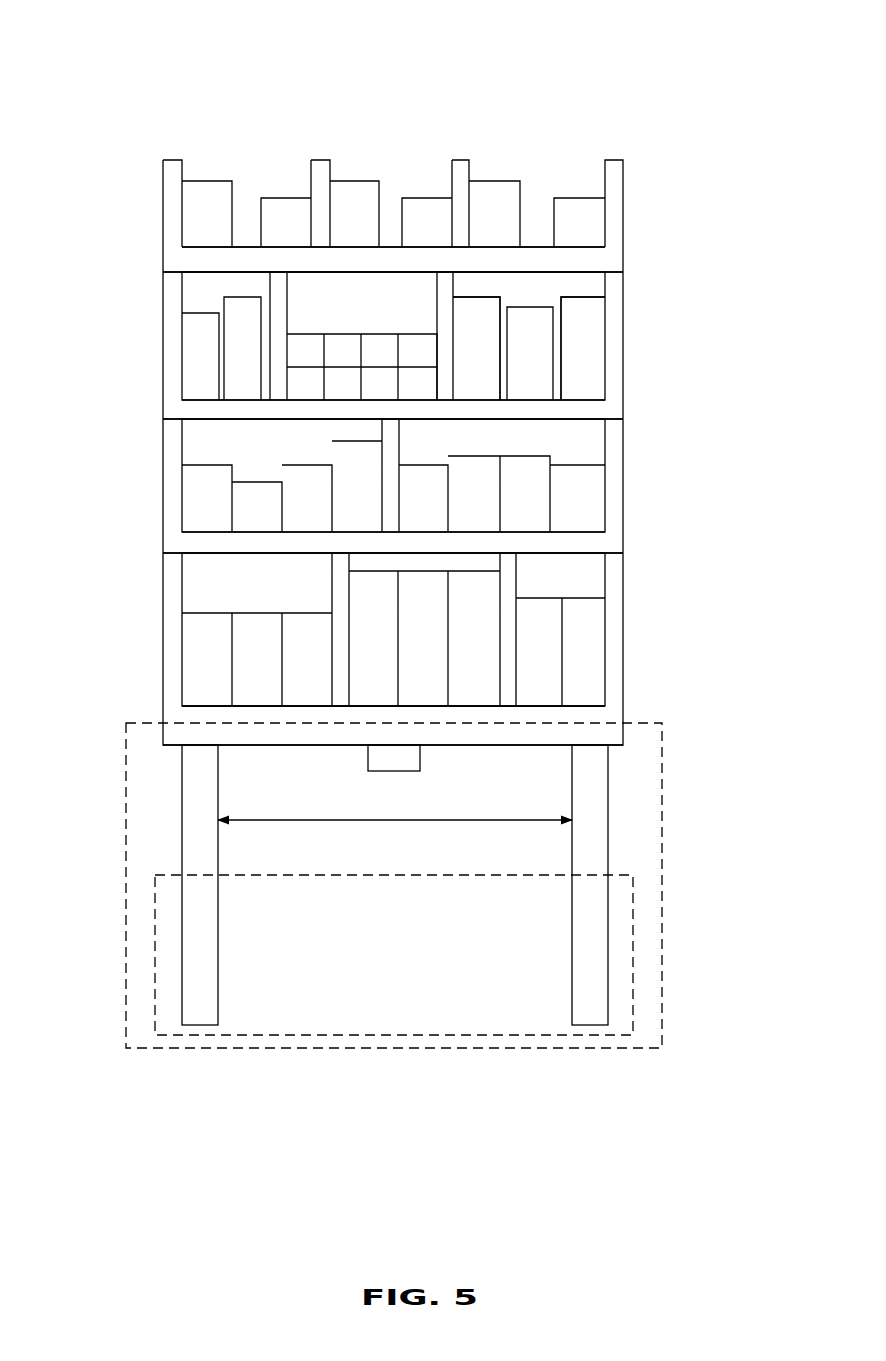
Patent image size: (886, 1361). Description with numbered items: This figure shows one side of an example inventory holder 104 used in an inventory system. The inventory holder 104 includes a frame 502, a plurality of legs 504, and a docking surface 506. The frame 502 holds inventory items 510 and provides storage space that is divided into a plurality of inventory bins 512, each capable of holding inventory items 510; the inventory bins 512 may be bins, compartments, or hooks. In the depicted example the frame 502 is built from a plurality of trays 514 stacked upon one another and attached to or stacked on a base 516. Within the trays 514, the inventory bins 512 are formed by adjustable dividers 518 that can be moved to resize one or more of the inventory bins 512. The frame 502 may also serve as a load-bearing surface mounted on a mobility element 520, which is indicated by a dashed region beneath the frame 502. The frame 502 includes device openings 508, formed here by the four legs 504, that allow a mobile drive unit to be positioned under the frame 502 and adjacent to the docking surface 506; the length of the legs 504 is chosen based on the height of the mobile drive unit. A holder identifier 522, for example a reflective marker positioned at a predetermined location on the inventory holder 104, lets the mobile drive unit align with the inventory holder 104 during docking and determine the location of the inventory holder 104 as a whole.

The inventory holder 104 is at (112, 58).
The frame 502 is at (394, 604).
The legs 504 is at (218, 930).
The docking surface 506 is at (485, 748).
The device openings 508 is at (482, 820).
The inventory items 510 is at (205, 595).
The inventory bins 512 is at (398, 313).
The trays 514 is at (623, 233).
The base 516 is at (642, 723).
The adjustable dividers 518 is at (287, 288).
The mobility element 520 is at (155, 875).
The holder identifier 522 is at (395, 771).